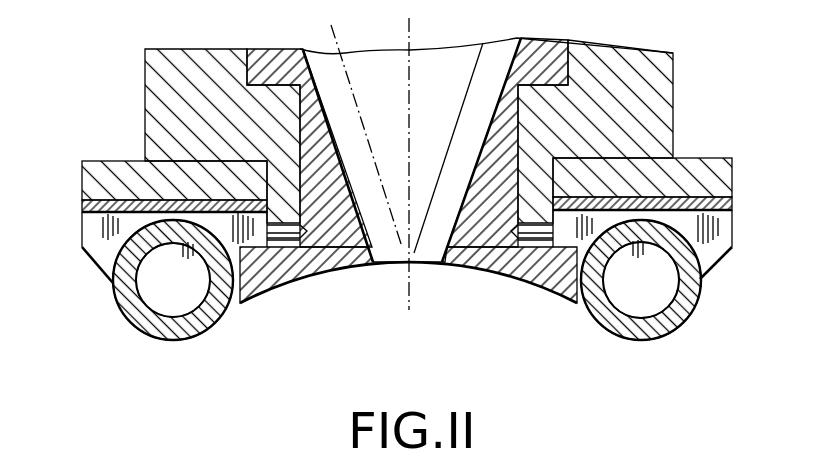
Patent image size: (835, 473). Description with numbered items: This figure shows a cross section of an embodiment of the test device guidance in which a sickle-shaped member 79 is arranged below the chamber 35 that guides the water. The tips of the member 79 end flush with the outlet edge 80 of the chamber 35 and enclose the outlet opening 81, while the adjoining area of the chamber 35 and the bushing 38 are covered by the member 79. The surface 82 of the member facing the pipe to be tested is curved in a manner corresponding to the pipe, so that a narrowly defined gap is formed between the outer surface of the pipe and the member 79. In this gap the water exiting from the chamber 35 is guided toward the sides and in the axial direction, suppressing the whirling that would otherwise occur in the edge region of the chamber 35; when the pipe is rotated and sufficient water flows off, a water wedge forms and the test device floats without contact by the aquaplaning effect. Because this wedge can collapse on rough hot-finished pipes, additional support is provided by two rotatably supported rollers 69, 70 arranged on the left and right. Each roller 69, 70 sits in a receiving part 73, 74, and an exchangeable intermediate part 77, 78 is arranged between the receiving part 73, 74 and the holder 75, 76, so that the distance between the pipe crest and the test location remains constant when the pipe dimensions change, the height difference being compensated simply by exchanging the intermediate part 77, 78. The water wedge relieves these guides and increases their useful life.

The chamber 35 is at (550, 65).
The bushing 38 is at (662, 118).
The roller 69 is at (123, 312).
The roller 70 is at (673, 330).
The receiving part 73 is at (107, 240).
The receiving part 74 is at (722, 235).
The holder 75 is at (95, 172).
The holder 76 is at (733, 165).
The exchangeable intermediate part 77 is at (85, 210).
The exchangeable intermediate part 78 is at (733, 203).
The sickle-shaped member 79 is at (290, 282).
The outlet edge 80 is at (372, 263).
The outlet opening 81 is at (432, 265).
The surface 82 is at (253, 300).